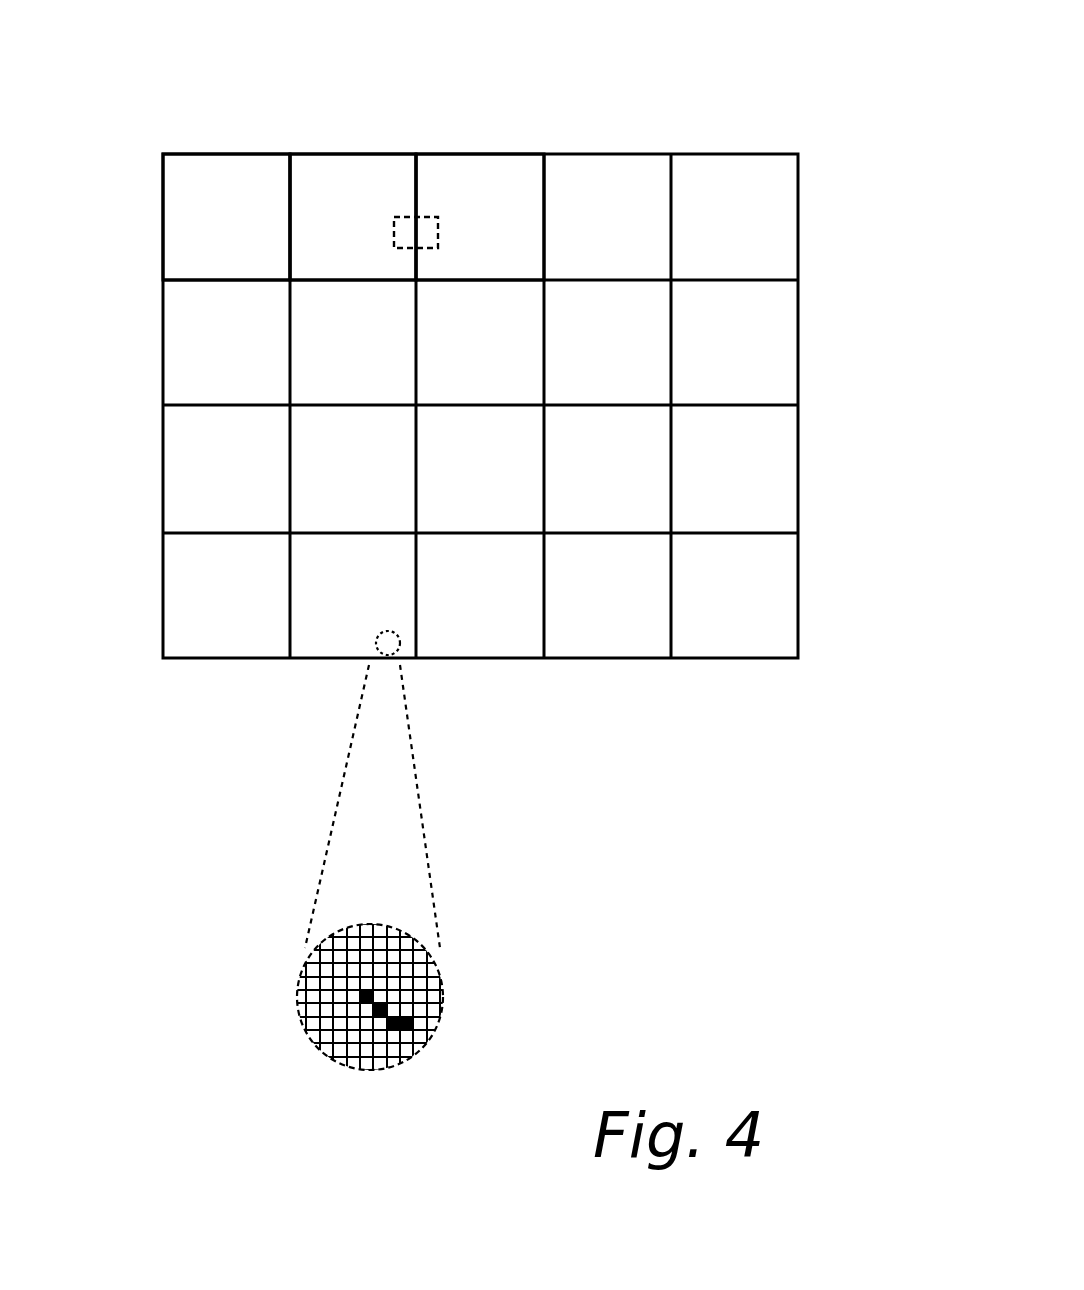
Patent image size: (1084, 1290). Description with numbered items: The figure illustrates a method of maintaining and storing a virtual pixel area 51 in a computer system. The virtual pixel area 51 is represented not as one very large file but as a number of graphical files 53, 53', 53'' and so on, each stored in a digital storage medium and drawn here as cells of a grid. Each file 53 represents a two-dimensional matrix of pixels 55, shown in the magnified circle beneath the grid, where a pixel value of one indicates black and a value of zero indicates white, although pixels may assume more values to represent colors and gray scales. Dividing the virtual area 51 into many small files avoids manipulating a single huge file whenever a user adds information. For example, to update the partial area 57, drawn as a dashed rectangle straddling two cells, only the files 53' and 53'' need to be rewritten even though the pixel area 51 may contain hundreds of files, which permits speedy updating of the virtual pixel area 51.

The virtual pixel area 51 is at (798, 335).
The file 53 is at (226, 144).
The file 53' is at (379, 144).
The file 53'' is at (508, 142).
The pixels 55 is at (413, 1018).
The partial area 57 is at (393, 235).